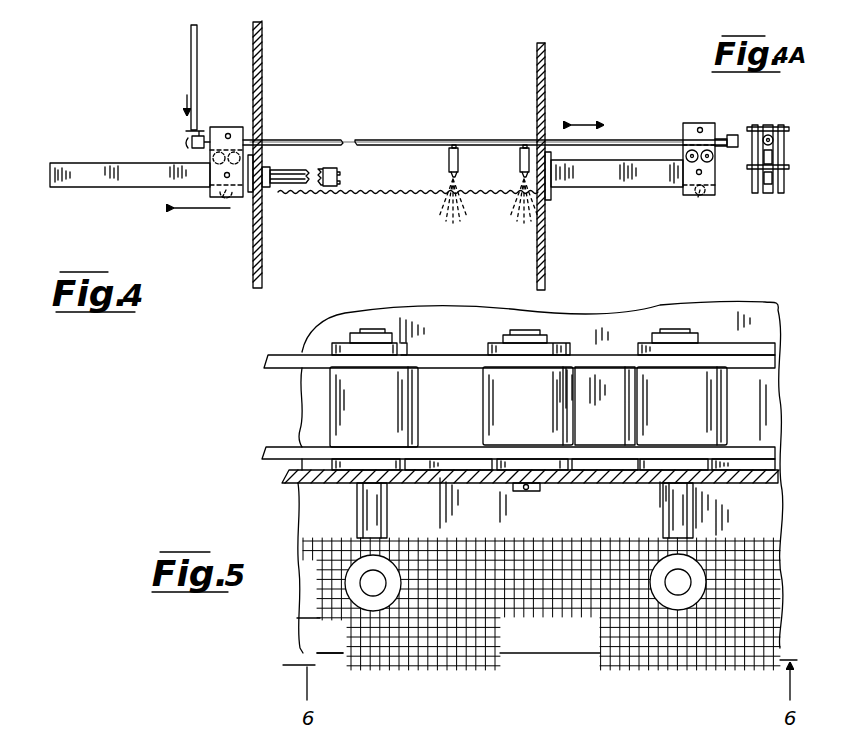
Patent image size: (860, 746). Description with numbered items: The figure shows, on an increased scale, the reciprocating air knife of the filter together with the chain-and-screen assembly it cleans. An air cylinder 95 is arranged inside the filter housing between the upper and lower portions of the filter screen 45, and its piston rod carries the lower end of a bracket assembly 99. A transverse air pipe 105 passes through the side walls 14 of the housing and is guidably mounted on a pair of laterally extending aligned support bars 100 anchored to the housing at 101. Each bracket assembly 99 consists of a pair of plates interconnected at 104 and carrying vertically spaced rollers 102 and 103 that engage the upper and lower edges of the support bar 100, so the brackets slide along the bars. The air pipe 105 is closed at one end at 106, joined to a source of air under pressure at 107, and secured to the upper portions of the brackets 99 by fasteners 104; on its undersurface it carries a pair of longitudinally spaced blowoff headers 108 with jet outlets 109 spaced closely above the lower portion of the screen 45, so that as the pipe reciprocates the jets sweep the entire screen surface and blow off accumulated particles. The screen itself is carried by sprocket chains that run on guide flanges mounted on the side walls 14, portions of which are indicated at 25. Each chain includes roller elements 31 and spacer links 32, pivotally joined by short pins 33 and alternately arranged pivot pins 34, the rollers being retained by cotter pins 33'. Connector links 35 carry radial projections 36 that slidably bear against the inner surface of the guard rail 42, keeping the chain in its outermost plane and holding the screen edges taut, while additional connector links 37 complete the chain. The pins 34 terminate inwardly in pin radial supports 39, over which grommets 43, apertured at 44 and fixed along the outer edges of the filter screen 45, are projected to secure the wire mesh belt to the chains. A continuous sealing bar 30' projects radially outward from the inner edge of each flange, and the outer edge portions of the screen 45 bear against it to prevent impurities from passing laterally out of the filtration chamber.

In FIG. 4, the side wall 14 is at (253, 34).
In FIG. 5, the guide portion 25 is at (575, 326).
In FIG. 5, the sealing bar 30' is at (300, 653).
In FIG. 5, the roller element 31 is at (490, 400).
In FIG. 5, the spacer link 32 is at (292, 358).
In FIG. 5, the pin 33 is at (525, 416).
In FIG. 5, the cotter pin 33' is at (511, 398).
In FIG. 5, the pivot pin 34 is at (386, 333).
In FIG. 5, the connector link 35 is at (442, 458).
In FIG. 5, the radial projection 36 is at (470, 466).
In FIG. 5, the connector link 37 is at (442, 353).
In FIG. 5, the pin radial support 39 is at (378, 570).
In FIG. 5, the guard rail 42 is at (462, 485).
In FIG. 5, the grommet 43 is at (375, 606).
In FIG. 5, the aperture 44 is at (672, 572).
In FIG. 4, the filter screen 45 is at (412, 193).
In FIG. 5, the filter screen 45 is at (600, 598).
In FIG. 4, the air cylinder 95 is at (300, 170).
In FIG. 4, the bracket assembly 99 is at (222, 127).
In FIG. 4A, the bracket assembly 99 is at (757, 176).
In FIG. 4, the support bar 100 is at (165, 178).
In FIG. 4A, the support bar 100 is at (785, 150).
In FIG. 4, the anchorage 101 is at (250, 196).
In FIG. 4, the roller 102 is at (226, 197).
In FIG. 4A, the roller 102 is at (768, 195).
In FIG. 4, the roller 103 is at (212, 158).
In FIG. 4A, the roller 103 is at (762, 148).
In FIG. 4, the fastener 104 is at (230, 134).
In FIG. 4, the air pipe 105 is at (410, 140).
In FIG. 4A, the air pipe 105 is at (765, 125).
In FIG. 4, the closed end 106 is at (733, 135).
In FIG. 4, the air supply connection 107 is at (190, 61).
In FIG. 4, the blowoff header 108 is at (448, 158).
In FIG. 4, the jet outlet 109 is at (520, 182).